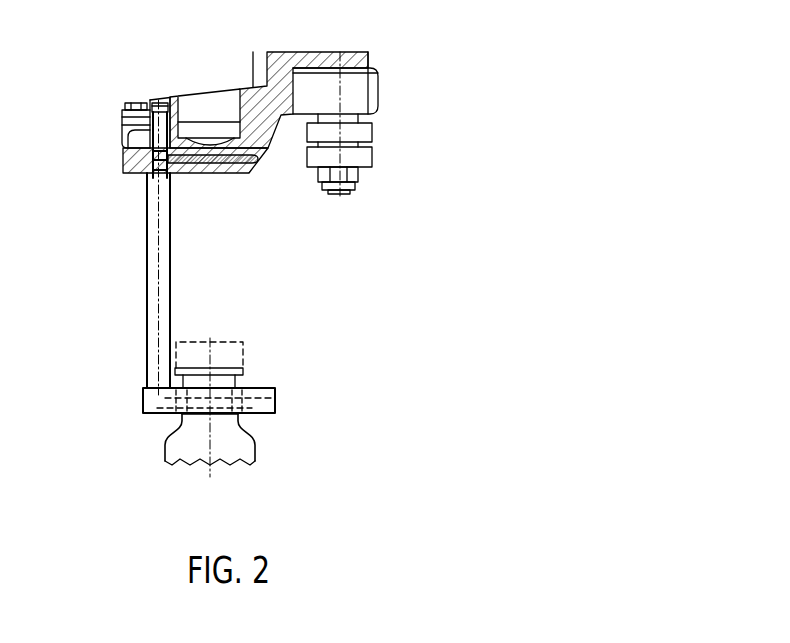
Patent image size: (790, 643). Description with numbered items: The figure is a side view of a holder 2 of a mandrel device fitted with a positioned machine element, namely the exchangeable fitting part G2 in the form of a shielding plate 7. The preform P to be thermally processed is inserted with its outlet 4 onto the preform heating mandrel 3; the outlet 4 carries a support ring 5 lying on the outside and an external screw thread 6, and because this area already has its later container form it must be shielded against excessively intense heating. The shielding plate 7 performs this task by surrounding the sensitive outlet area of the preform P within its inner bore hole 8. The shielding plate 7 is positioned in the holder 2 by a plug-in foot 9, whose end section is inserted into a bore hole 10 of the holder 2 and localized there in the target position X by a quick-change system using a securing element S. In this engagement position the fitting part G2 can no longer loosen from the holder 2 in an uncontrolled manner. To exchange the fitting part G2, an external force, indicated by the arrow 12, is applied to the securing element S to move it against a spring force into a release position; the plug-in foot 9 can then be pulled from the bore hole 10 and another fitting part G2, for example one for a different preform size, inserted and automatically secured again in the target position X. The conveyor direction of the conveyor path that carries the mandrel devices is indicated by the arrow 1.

The arrow 1 is at (152, 99).
The holder 2 is at (369, 60).
The preform heating mandrel 3 is at (222, 371).
The outlet 4 is at (238, 382).
The support ring 5 is at (277, 398).
The external screw thread 6 is at (143, 416).
The shielding plate 7 is at (143, 391).
The inner bore hole 8 is at (167, 410).
The plug-in foot 9 is at (170, 262).
The bore hole 10 is at (170, 98).
The arrow 12 is at (99, 162).
The securing element S is at (130, 178).
The target position X is at (191, 194).
The fitting part G2 is at (129, 321).
The preform P is at (260, 437).